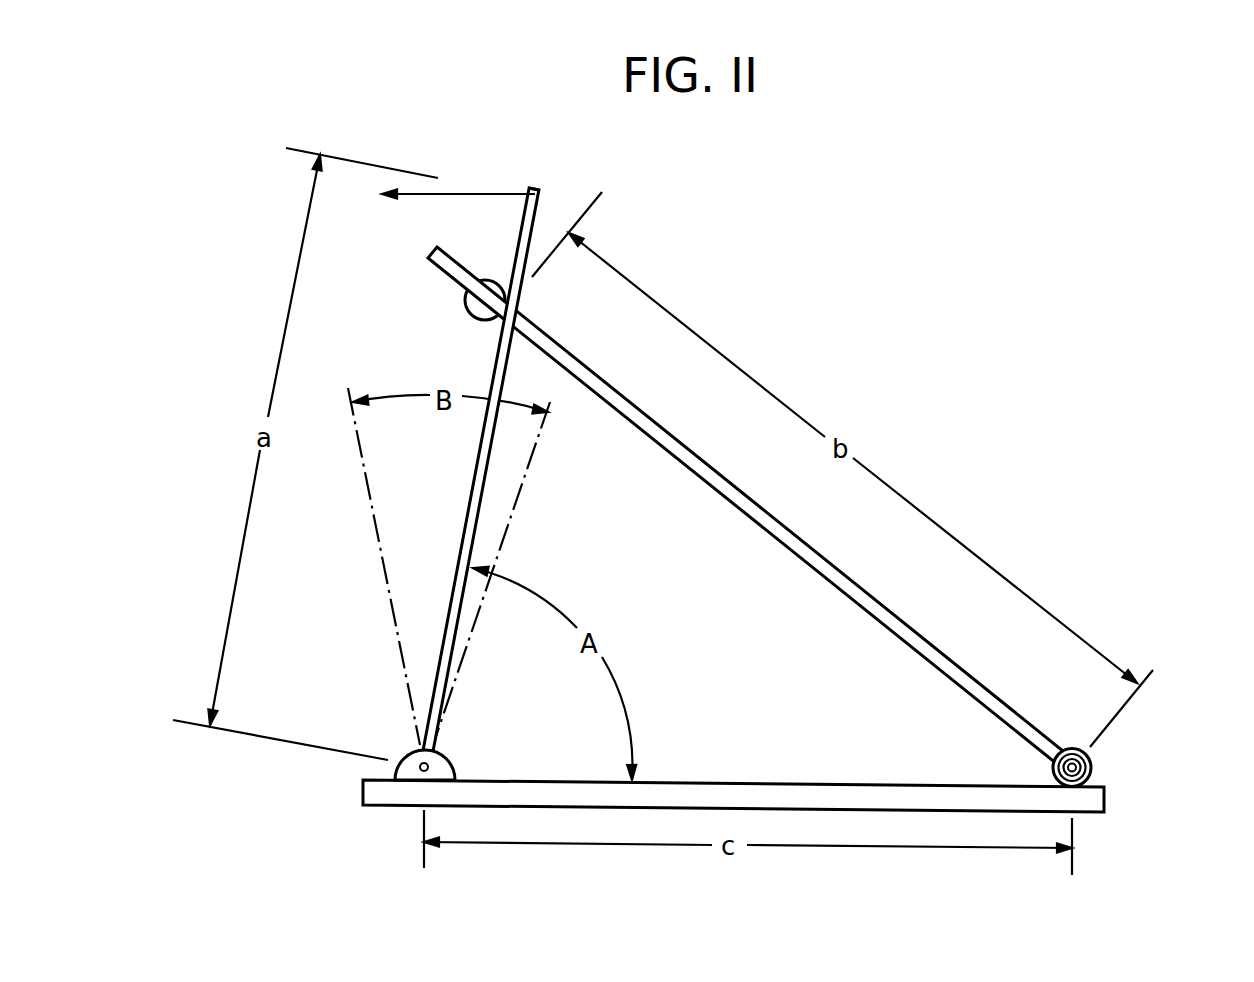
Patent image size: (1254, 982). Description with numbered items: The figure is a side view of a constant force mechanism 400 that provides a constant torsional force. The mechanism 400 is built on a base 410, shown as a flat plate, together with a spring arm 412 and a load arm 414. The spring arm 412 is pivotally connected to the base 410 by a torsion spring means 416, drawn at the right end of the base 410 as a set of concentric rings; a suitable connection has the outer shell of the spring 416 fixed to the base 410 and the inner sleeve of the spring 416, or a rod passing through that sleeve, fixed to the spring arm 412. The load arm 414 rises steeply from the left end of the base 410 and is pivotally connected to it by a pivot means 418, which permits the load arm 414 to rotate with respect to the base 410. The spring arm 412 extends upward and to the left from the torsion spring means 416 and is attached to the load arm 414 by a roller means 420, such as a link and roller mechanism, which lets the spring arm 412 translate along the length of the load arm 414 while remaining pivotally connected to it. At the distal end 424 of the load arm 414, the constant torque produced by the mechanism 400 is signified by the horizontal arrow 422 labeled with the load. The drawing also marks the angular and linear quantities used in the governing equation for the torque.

The constant force mechanism 400 is at (762, 212).
The base 410 is at (815, 793).
The spring arm 412 is at (675, 443).
The load arm 414 is at (485, 462).
The torsion spring means 416 is at (1088, 757).
The pivot means 418 is at (420, 765).
The roller means 420 is at (481, 312).
The arrow 422 is at (488, 194).
The distal end 424 is at (538, 190).